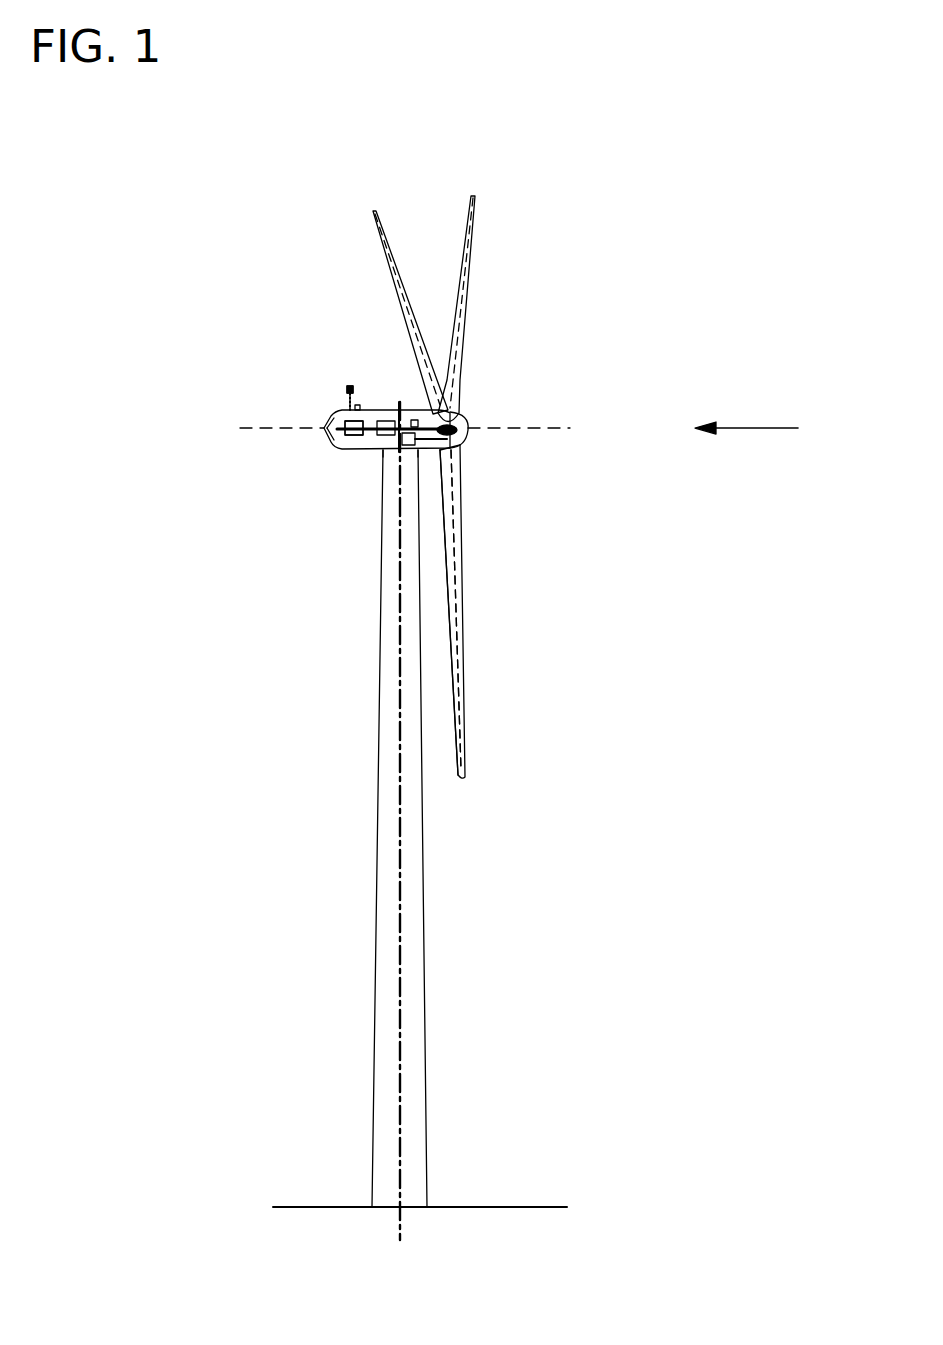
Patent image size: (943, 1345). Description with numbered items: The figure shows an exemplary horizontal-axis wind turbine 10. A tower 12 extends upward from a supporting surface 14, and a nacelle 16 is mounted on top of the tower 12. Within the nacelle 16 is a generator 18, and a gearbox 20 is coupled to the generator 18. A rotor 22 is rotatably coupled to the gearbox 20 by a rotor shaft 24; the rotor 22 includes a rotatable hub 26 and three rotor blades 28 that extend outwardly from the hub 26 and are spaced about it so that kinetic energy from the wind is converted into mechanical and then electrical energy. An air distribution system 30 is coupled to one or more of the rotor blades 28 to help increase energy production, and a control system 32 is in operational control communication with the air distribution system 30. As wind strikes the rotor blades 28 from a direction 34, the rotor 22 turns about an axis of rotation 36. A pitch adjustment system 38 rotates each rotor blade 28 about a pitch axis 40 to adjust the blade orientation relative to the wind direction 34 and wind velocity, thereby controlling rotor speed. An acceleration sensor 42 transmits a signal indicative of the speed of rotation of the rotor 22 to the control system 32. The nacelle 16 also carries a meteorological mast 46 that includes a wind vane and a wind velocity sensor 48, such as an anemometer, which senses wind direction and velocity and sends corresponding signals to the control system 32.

The wind turbine 10 is at (599, 222).
The tower 12 is at (375, 982).
The supporting surface 14 is at (330, 1207).
The nacelle 16 is at (373, 408).
The generator 18 is at (345, 413).
The gearbox 20 is at (373, 434).
The rotor 22 is at (485, 378).
The rotor shaft 24 is at (393, 435).
The hub 26 is at (466, 424).
The rotor blade 28 is at (372, 214).
The air distribution system 30 is at (480, 519).
The control system 32 is at (383, 457).
The direction 34 is at (766, 428).
The axis of rotation 36 is at (540, 432).
The pitch adjustment system 38 is at (480, 452).
The pitch axis 40 is at (455, 636).
The acceleration sensor 42 is at (413, 419).
The meteorological mast 46 is at (346, 364).
The wind velocity sensor 48 is at (347, 387).